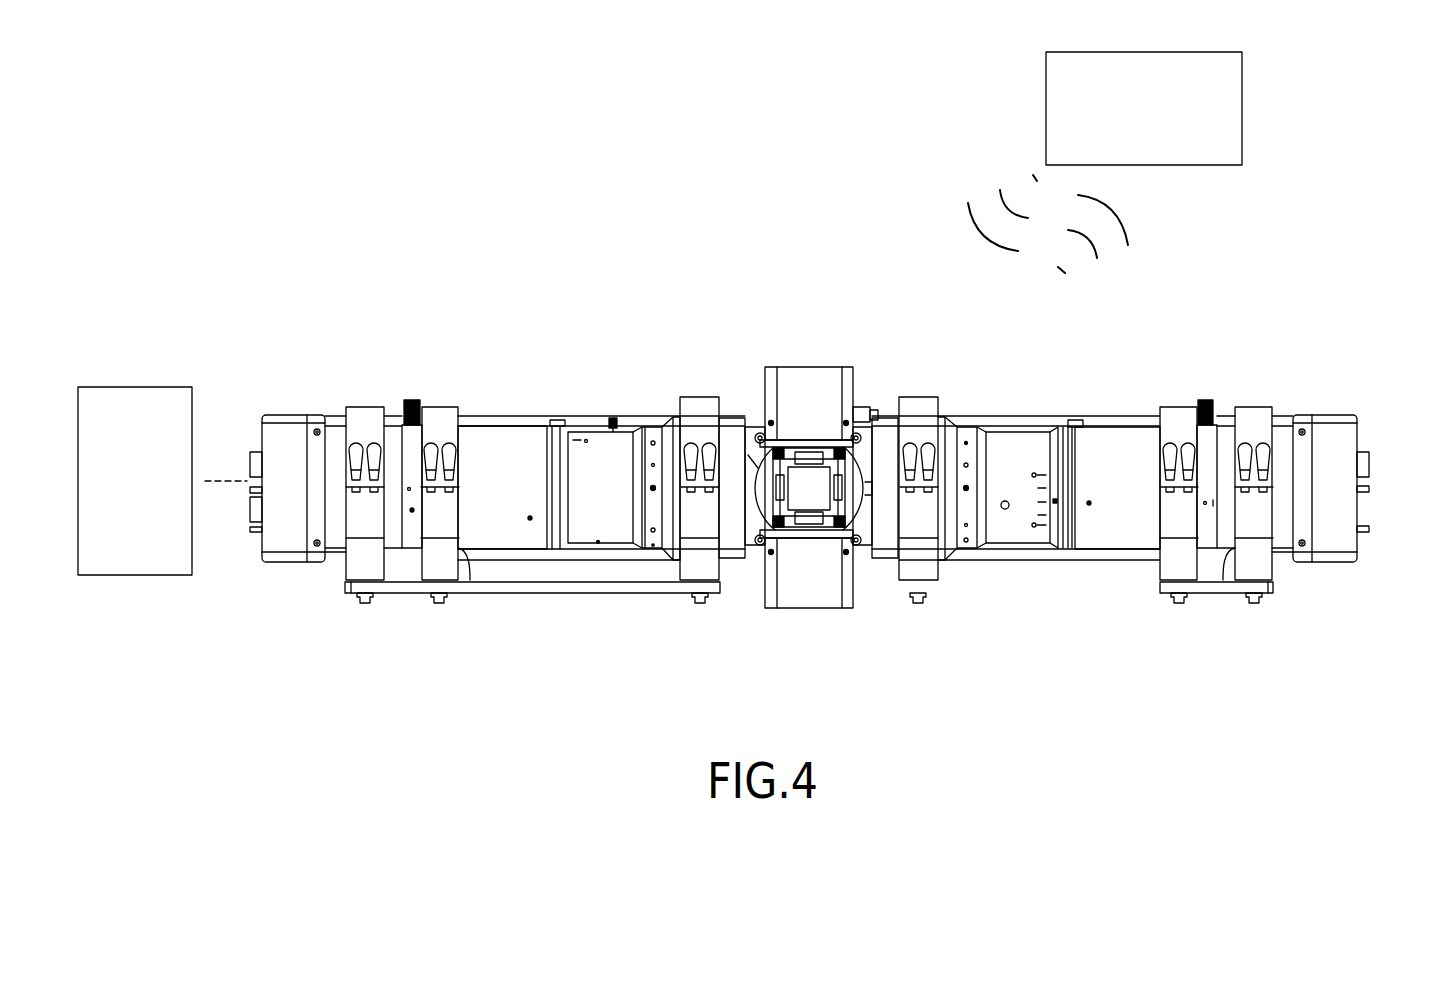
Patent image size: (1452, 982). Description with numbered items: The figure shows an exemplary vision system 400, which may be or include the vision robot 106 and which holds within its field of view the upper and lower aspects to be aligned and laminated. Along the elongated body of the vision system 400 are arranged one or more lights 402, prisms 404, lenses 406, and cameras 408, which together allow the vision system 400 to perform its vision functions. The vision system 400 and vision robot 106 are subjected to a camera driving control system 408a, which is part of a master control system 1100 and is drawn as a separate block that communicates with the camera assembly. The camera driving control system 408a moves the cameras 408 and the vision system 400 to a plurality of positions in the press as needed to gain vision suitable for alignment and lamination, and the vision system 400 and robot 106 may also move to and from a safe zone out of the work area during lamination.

The vision system 400 is at (592, 86).
The vision robot 106 is at (135, 387).
The lights 402 is at (772, 412).
The prisms 404 is at (665, 586).
The lenses 406 is at (1135, 555).
The cameras 408 is at (1385, 556).
The camera driving control system 408a is at (1164, 137).
The master control system 1100 is at (1242, 113).